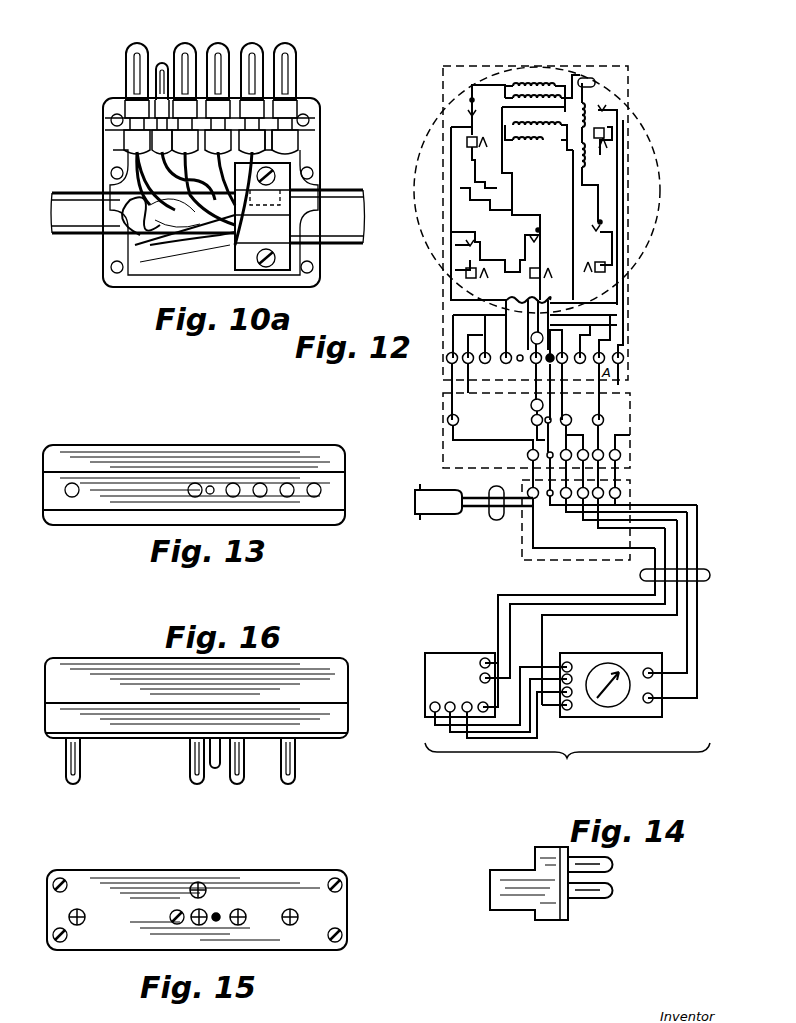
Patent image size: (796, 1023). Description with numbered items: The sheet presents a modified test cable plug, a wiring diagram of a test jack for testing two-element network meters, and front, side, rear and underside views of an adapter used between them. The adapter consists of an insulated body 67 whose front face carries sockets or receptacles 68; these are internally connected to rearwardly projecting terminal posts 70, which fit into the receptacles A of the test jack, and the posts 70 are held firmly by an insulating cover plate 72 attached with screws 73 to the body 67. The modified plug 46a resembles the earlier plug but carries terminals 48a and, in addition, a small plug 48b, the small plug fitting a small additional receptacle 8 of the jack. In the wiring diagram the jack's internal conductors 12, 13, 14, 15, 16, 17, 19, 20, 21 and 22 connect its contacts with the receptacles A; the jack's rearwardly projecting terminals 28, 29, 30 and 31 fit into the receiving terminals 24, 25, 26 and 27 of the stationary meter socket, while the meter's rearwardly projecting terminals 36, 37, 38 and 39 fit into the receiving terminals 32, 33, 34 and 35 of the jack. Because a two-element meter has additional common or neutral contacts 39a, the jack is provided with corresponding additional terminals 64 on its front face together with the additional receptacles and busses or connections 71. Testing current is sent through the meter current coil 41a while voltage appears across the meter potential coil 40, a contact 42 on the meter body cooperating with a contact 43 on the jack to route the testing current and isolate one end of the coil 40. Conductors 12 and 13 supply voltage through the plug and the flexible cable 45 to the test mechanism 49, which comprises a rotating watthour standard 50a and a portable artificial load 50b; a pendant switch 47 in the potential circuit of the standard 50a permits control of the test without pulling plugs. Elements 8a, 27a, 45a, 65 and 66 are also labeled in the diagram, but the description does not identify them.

In FIG. 12, the receptacle 8 is at (535, 351).
In FIG. 12, the terminal 8a is at (518, 362).
In FIG. 12, the conductor 12 is at (443, 162).
In FIG. 12, the conductor 13 is at (622, 195).
In FIG. 12, the conductor 14 is at (623, 292).
In FIG. 12, the conductor 15 is at (483, 335).
In FIG. 12, the conductor 16 is at (453, 318).
In FIG. 12, the conductor 17 is at (622, 347).
In FIG. 12, the conductor 19 is at (620, 332).
In FIG. 12, the conductor 20 is at (451, 292).
In FIG. 12, the conductor 21 is at (618, 307).
In FIG. 12, the conductor 22 is at (620, 320).
In FIG. 12, the receiving terminal 24 is at (467, 142).
In FIG. 12, the receiving terminal 25 is at (612, 158).
In FIG. 12, the receiving terminal 26 is at (607, 266).
In FIG. 12, the receiving terminal 27 is at (466, 273).
In FIG. 12, the relay contact 27a is at (497, 185).
In FIG. 12, the rearwardly projecting terminal 28 is at (486, 130).
In FIG. 12, the rearwardly projecting terminal 29 is at (605, 127).
In FIG. 12, the rearwardly projecting terminal 30 is at (605, 254).
In FIG. 12, the rearwardly projecting terminal 31 is at (478, 260).
In FIG. 12, the receiving terminal 32 is at (468, 115).
In FIG. 12, the receiving terminal 33 is at (607, 110).
In FIG. 12, the receiving terminal 34 is at (607, 233).
In FIG. 12, the receiving terminal 35 is at (453, 245).
In FIG. 12, the meter terminal 36 is at (470, 100).
In FIG. 12, the meter terminal 37 is at (603, 98).
In FIG. 12, the meter terminal 38 is at (603, 222).
In FIG. 12, the meter terminal 39 is at (453, 232).
In FIG. 12, the common or neutral contact 39a is at (460, 188).
In FIG. 12, the meter potential coil 40 is at (542, 90).
In FIG. 12, the meter current coil 41a is at (538, 146).
In FIG. 12, the contact 42 is at (590, 80).
In FIG. 12, the contact 43 is at (600, 84).
In FIG. 12, the flexible cable 45 is at (710, 575).
In FIG. 12, the cable grommet 45a is at (490, 520).
In FIG. 10A, the plug 46a is at (303, 130).
In FIG. 12, the plug 46a is at (575, 560).
In FIG. 12, the pendant switch 47 is at (418, 516).
In FIG. 10A, the plug terminal 48a is at (297, 80).
In FIG. 12, the plug terminal 48a is at (621, 493).
In FIG. 10A, the small plug 48b is at (162, 77).
In FIG. 12, the small plug 48b is at (530, 520).
In FIG. 12, the test mechanism 49 is at (567, 761).
In FIG. 12, the rotating watthour standard 50a is at (652, 717).
In FIG. 12, the artificial load 50b is at (480, 680).
In FIG. 12, the additional terminal 64 is at (488, 192).
In FIG. 12, the contact 65 is at (468, 184).
In FIG. 12, the contact 66 is at (540, 247).
In FIG. 13, the insulated body 67 is at (345, 462).
In FIG. 16, the insulated body 67 is at (348, 688).
In FIG. 12, the insulated body 67 is at (459, 420).
In FIG. 13, the socket 68 is at (314, 497).
In FIG. 16, the terminal post 70 is at (296, 765).
In FIG. 15, the terminal post 70 is at (204, 884).
In FIG. 14, the terminal post 70 is at (603, 877).
In FIG. 12, the buss 71 is at (488, 215).
In FIG. 16, the insulating cover plate 72 is at (348, 737).
In FIG. 15, the insulating cover plate 72 is at (250, 903).
In FIG. 14, the insulating cover plate 72 is at (560, 920).
In FIG. 15, the screw 73 is at (342, 887).